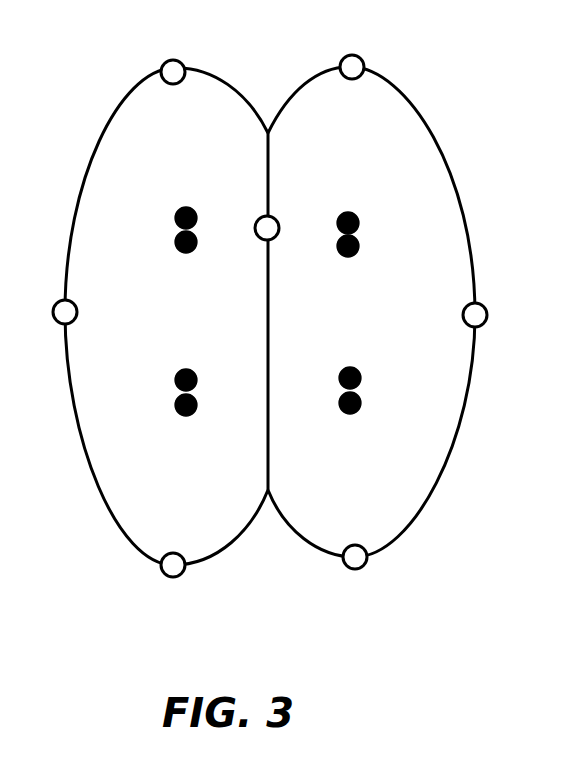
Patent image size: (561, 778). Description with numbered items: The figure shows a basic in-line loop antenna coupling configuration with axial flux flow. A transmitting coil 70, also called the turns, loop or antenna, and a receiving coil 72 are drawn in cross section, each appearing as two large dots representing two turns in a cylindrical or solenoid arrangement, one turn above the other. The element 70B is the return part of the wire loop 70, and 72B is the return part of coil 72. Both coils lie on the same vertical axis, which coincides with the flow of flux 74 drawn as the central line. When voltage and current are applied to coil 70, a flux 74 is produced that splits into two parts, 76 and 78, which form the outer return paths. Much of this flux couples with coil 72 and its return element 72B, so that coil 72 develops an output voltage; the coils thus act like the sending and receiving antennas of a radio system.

The coil 70 is at (175, 403).
The return part of the wire loop 70B is at (365, 403).
The coil 72 is at (180, 207).
The return part of coil 72B is at (360, 228).
The flux 74 is at (270, 352).
The flux return path 76 is at (418, 105).
The flux return path 78 is at (238, 93).